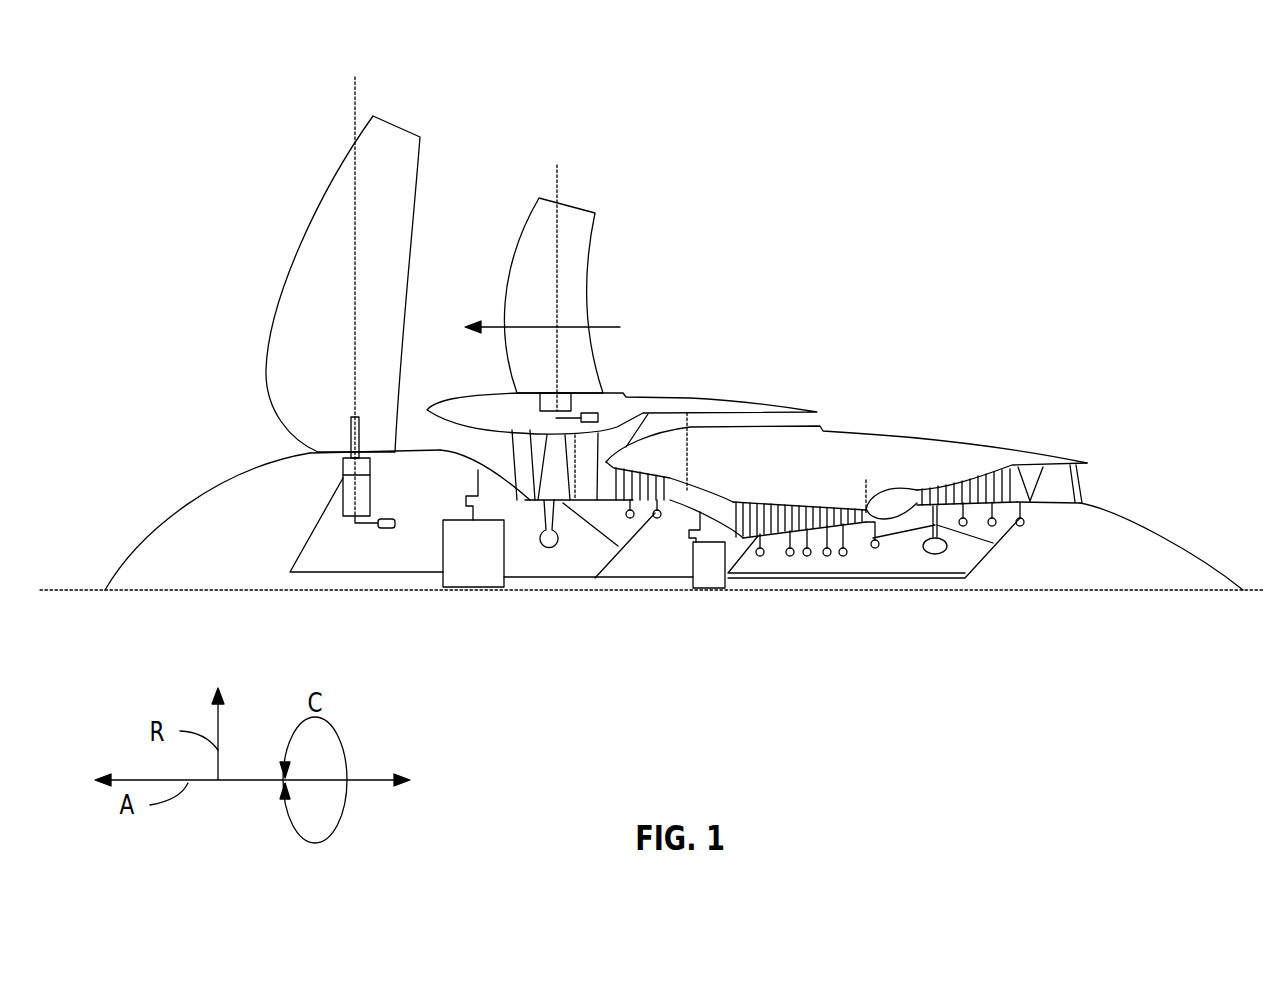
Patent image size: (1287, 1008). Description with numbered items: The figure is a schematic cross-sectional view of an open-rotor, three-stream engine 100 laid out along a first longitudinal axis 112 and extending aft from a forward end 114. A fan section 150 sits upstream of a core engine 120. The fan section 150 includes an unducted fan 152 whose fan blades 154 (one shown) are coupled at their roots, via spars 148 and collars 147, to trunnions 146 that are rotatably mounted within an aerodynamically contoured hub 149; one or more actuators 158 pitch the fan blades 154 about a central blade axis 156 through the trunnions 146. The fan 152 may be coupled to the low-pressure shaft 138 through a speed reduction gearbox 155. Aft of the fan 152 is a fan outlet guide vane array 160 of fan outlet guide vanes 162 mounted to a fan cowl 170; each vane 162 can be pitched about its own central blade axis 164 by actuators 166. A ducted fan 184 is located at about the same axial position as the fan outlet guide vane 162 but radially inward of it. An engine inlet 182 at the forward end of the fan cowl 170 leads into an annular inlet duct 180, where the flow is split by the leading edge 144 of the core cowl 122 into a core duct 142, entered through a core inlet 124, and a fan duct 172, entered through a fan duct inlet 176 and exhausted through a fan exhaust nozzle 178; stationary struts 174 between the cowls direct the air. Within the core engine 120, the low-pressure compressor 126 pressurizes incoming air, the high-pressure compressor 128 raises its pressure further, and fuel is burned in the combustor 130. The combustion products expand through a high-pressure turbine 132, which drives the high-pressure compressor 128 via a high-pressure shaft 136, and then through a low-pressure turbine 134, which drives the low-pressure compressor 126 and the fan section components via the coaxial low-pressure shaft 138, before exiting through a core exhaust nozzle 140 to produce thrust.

The three-stream engine 100 is at (866, 112).
The first longitudinal axis 112 is at (1275, 592).
The forward end 114 is at (105, 588).
The core engine 120 is at (838, 480).
The core cowl 122 is at (830, 428).
The core inlet 124 is at (601, 507).
The low-pressure compressor 126 is at (652, 527).
The high-pressure compressor 128 is at (823, 557).
The combustor 130 is at (885, 545).
The high-pressure turbine 132 is at (940, 462).
The low-pressure turbine 134 is at (1003, 438).
The high-pressure shaft 136 is at (953, 555).
The low-pressure shaft 138 is at (305, 545).
The core exhaust nozzle 140 is at (1073, 485).
The core duct 142 is at (895, 488).
The leading edge 144 is at (619, 547).
The trunnion 146 is at (343, 497).
The collar 147 is at (318, 454).
The spar 148 is at (351, 432).
The hub 149 is at (175, 507).
The fan section 150 is at (172, 135).
The fan 152 is at (210, 328).
The fan blade 154 is at (320, 230).
The speed reduction gearbox 155 is at (475, 562).
The central blade axis 156 is at (358, 104).
The actuator 158 is at (382, 518).
The fan outlet guide vane array 160 is at (474, 215).
The fan outlet guide vane 162 is at (580, 287).
The central blade axis 164 is at (560, 187).
The actuator 166 is at (602, 413).
The fan cowl 170 is at (652, 393).
The fan duct 172 is at (667, 393).
The stationary strut 174 is at (709, 456).
The fan duct inlet 176 is at (595, 467).
The fan exhaust nozzle 178 is at (806, 400).
The inlet duct 180 is at (518, 502).
The engine inlet 182 is at (422, 420).
The ducted fan 184 is at (547, 452).